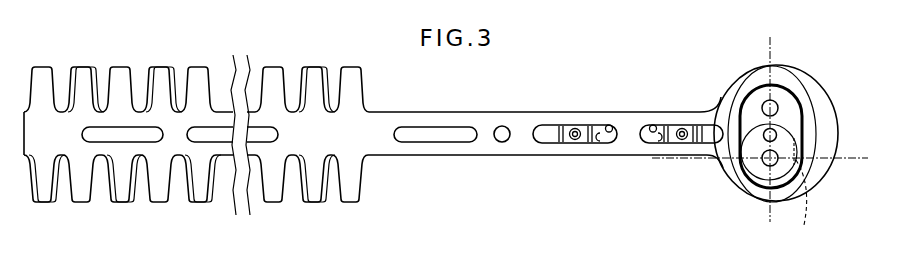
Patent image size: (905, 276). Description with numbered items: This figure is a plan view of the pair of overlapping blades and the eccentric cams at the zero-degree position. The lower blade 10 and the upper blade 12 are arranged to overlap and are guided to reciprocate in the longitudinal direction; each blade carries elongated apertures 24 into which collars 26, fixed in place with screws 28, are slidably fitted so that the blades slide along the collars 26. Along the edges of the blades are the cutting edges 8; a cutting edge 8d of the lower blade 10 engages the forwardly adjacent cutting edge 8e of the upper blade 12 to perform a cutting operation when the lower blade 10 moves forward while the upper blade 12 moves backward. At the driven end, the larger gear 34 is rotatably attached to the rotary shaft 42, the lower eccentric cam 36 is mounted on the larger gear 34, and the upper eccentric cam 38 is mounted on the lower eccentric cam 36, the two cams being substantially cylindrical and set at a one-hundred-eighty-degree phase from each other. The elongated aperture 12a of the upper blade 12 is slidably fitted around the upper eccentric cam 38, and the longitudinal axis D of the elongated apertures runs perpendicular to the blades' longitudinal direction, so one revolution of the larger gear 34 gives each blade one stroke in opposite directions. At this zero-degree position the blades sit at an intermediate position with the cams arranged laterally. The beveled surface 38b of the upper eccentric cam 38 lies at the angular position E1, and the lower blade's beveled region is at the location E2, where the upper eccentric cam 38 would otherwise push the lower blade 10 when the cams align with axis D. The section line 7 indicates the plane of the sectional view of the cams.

The cutting edges 8 is at (137, 210).
The cutting edge 8d is at (143, 184).
The cutting edge 8e is at (134, 184).
The lower blade 10 is at (312, 187).
The upper blade 12 is at (431, 152).
The elongated aperture 12a is at (748, 167).
The elongated apertures 24 is at (653, 126).
The collars 26 is at (661, 137).
The screws 28 is at (577, 128).
The larger gear 34 is at (822, 110).
The lower eccentric cam 36 is at (782, 103).
The upper eccentric cam 38 is at (760, 168).
The beveled surface 38b is at (817, 199).
The rotary shaft 42 is at (762, 120).
The section line 7 is at (663, 171).
The longitudinal axis D is at (770, 121).
The angular position E1 is at (820, 199).
The location E2 is at (798, 142).